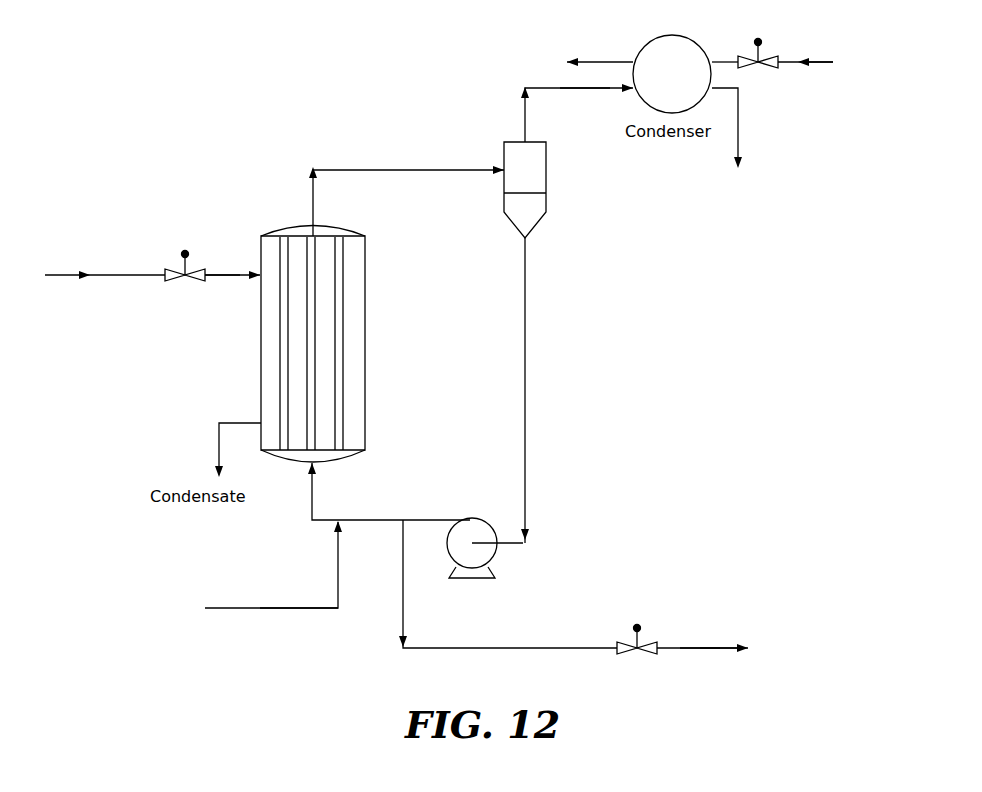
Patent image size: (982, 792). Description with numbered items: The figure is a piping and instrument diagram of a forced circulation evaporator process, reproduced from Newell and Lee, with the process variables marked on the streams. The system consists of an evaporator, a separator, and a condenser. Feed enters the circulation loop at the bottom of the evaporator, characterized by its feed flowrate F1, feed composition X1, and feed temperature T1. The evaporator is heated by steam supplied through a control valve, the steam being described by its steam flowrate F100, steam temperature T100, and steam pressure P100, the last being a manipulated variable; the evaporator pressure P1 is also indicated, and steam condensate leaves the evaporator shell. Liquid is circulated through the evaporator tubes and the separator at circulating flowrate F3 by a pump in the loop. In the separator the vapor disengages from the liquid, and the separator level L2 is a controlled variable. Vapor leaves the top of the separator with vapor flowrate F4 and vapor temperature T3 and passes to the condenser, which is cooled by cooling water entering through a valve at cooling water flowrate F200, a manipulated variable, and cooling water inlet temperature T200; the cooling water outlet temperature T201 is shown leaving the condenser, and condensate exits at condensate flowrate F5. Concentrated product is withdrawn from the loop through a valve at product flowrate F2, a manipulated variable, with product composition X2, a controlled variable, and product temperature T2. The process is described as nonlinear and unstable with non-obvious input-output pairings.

The evaporator pressure P1 is at (292, 229).
The steam flowrate F100 is at (117, 272).
The steam pressure P100 is at (232, 287).
The steam temperature T100 is at (227, 299).
The circulating flowrate F3 is at (361, 504).
The feed flowrate F1 is at (221, 569).
The feed composition X1 is at (215, 608).
The feed temperature T1 is at (252, 608).
The product flowrate F2 is at (610, 594).
The product composition X2 is at (749, 658).
The product temperature T2 is at (774, 658).
The separator level L2 is at (568, 190).
The vapor flowrate F4 is at (549, 105).
The vapor temperature T3 is at (585, 100).
The cooling water outlet temperature T201 is at (575, 56).
The cooling water flowrate F200 is at (788, 53).
The cooling water inlet temperature T200 is at (838, 76).
The condensate flowrate F5 is at (771, 151).